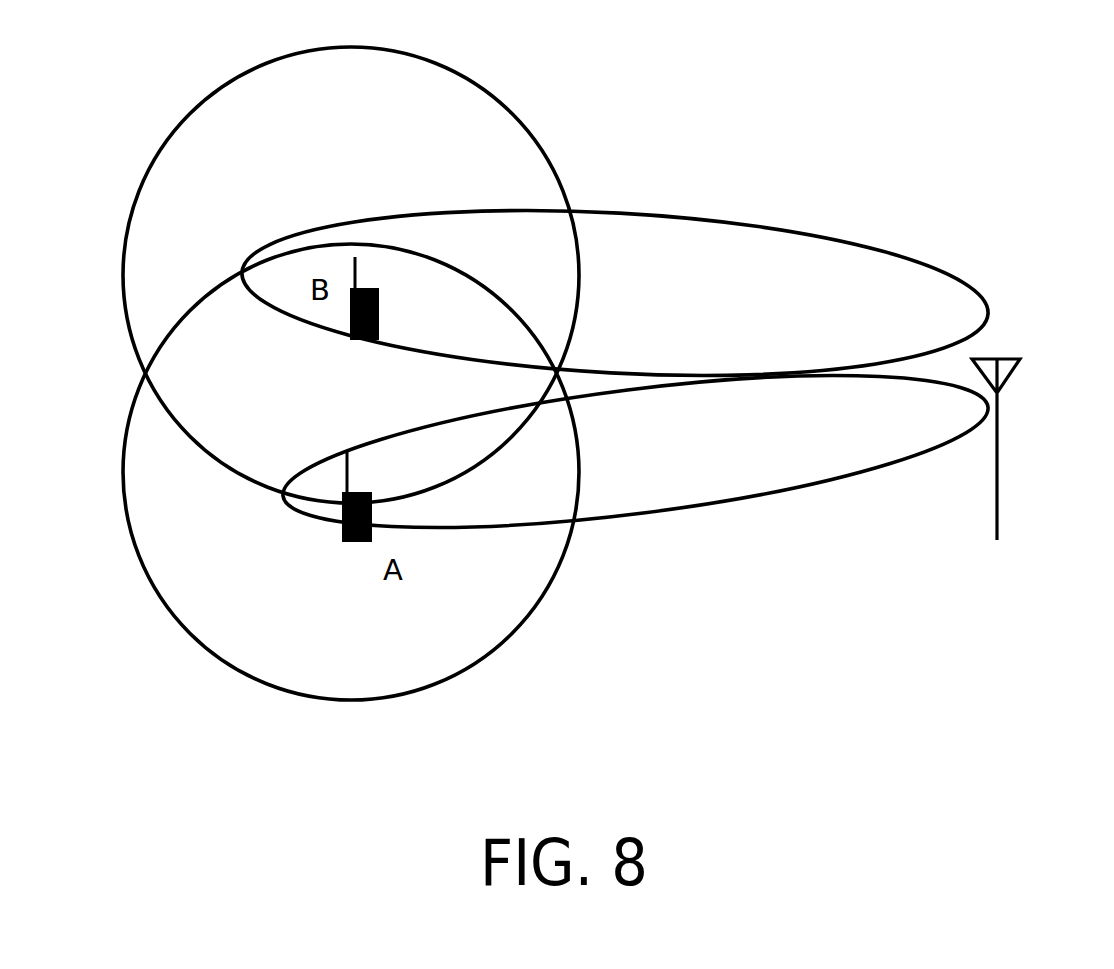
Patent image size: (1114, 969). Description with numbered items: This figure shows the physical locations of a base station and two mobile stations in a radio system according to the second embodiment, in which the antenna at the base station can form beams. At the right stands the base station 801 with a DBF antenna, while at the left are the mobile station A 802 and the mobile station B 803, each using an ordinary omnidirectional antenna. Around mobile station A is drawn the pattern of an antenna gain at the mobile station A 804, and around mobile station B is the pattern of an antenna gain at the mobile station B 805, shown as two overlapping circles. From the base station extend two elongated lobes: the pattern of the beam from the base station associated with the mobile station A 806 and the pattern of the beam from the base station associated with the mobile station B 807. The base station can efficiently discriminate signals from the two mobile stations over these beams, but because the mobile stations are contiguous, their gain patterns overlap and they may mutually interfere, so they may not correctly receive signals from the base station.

The base station with a DBF antenna 801 is at (998, 439).
The mobile station A 802 is at (358, 543).
The mobile station B 803 is at (380, 303).
The pattern of an antenna gain at the mobile station A 804 is at (508, 640).
The pattern of an antenna gain at the mobile station B 805 is at (487, 88).
The pattern of the beam from the base station associated with the mobile station A 806 is at (767, 488).
The pattern of the beam from the base station associated with the mobile station B 807 is at (740, 222).